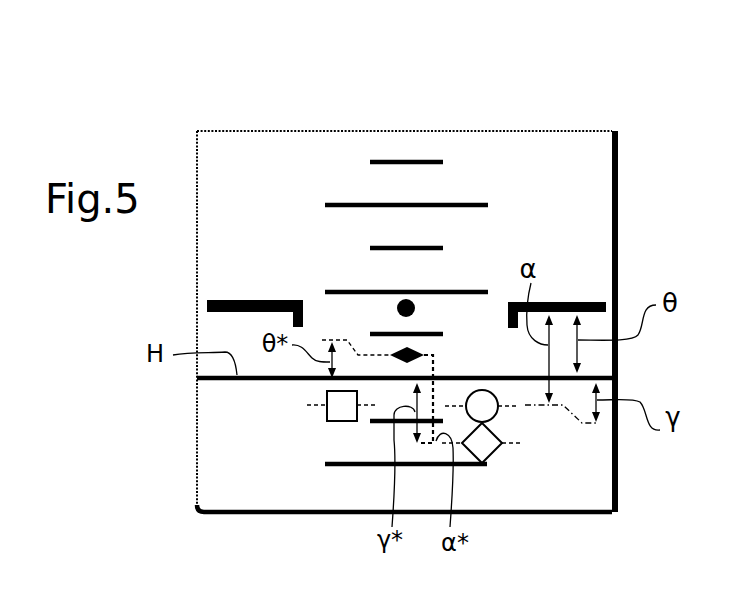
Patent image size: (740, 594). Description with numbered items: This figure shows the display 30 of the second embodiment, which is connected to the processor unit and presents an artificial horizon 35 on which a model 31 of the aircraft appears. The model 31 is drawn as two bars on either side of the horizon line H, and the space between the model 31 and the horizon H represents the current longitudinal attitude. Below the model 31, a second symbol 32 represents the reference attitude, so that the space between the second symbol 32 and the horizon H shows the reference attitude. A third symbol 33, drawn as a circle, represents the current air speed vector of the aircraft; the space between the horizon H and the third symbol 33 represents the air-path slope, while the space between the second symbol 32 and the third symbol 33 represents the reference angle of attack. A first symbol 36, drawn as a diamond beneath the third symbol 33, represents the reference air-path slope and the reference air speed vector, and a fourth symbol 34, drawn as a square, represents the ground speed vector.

The display 30 is at (495, 92).
The model of the aircraft 31 is at (262, 300).
The second symbol 32 is at (401, 346).
The third symbol 33 is at (492, 390).
The fourth symbol 34 is at (327, 416).
The artificial horizon 35 is at (595, 182).
The first symbol 36 is at (493, 453).